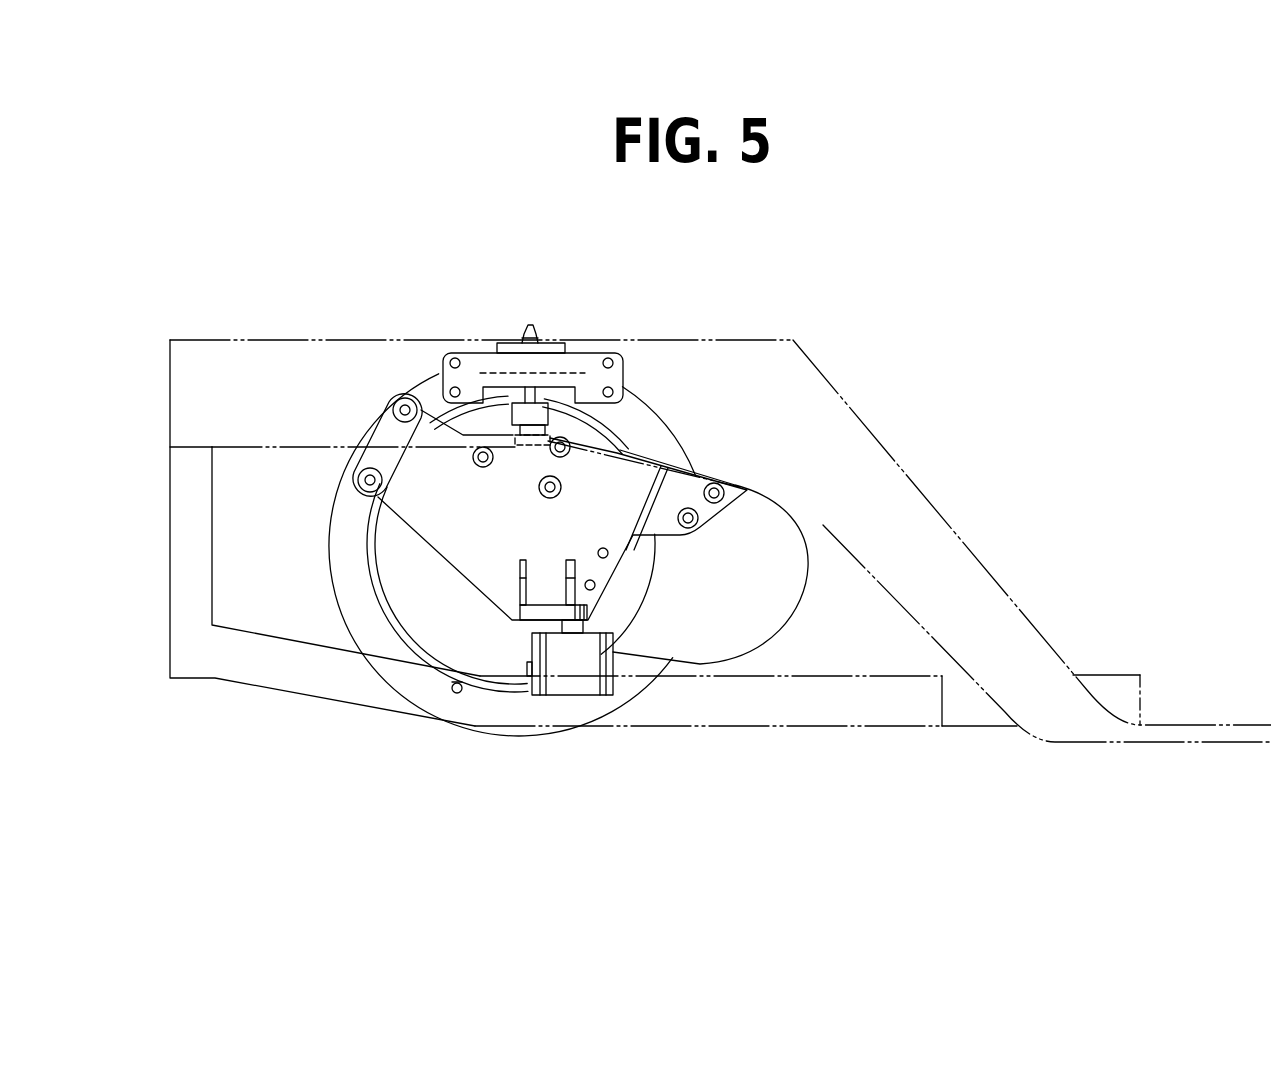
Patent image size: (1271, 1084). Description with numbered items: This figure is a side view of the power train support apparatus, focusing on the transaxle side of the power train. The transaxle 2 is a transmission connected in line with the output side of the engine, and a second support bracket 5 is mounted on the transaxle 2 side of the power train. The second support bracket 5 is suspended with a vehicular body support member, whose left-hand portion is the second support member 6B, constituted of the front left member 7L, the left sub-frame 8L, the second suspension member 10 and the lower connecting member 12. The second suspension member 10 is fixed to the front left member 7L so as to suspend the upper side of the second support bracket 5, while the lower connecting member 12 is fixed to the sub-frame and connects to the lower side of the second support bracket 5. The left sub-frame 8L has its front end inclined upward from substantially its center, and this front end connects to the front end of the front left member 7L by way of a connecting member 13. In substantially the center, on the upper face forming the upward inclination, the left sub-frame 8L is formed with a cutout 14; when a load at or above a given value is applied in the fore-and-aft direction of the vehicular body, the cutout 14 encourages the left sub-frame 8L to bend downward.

The transaxle 2 is at (787, 537).
The second support bracket 5 is at (450, 532).
The second support member 6B is at (948, 315).
The front left member 7L is at (978, 590).
The left sub-frame 8L is at (818, 712).
The second suspension member 10 is at (590, 362).
The lower connecting member 12 is at (574, 683).
The connecting member 13 is at (190, 528).
The cutout 14 is at (447, 693).